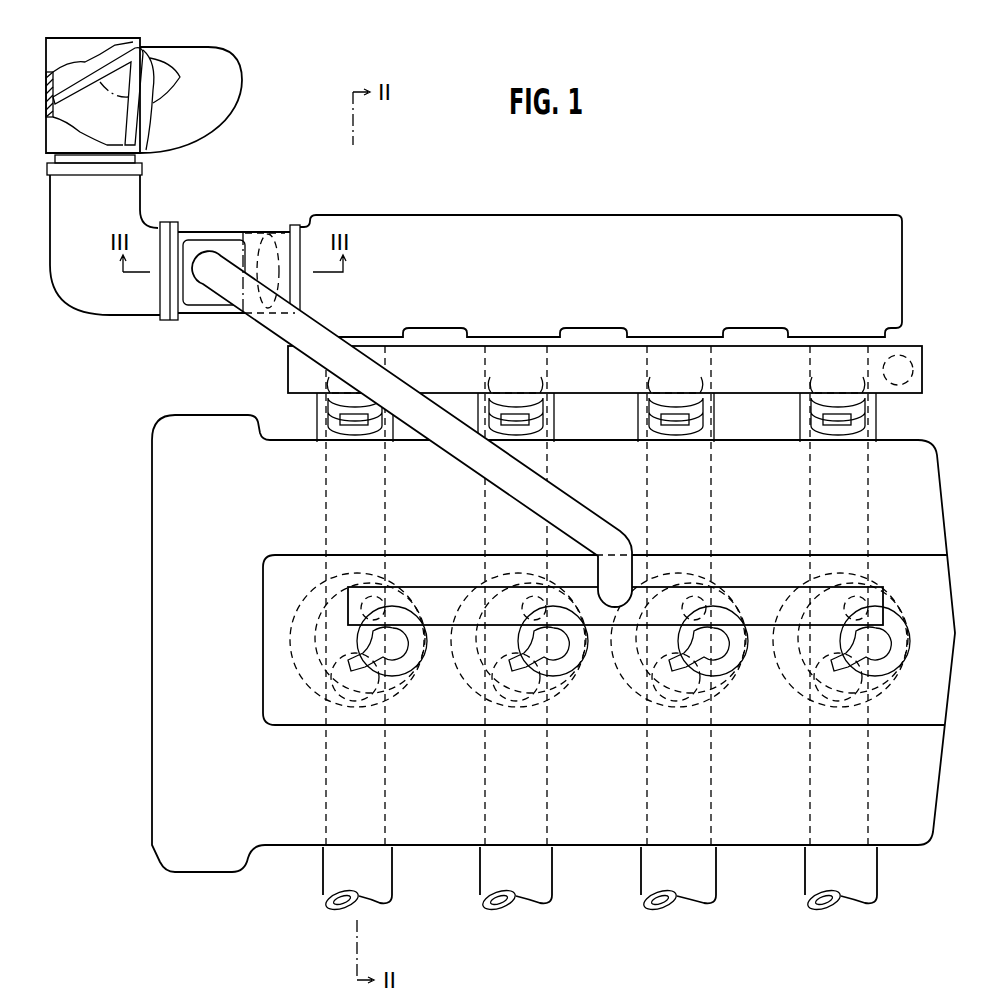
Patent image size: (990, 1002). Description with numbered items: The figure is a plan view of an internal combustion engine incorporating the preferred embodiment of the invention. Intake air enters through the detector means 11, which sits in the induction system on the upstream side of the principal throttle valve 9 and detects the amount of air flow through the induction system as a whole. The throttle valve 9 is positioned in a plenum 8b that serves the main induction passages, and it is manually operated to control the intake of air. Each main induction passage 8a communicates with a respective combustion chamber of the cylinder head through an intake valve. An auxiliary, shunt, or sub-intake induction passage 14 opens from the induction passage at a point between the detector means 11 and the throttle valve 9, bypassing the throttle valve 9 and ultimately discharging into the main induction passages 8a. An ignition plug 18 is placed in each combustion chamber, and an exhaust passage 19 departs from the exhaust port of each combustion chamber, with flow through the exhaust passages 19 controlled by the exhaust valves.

The detector means 11 is at (173, 34).
The principal throttle valve 9 is at (283, 232).
The plenum 8b is at (431, 228).
The main induction passage 8a is at (390, 476).
The sub-intake induction passage 14 is at (325, 333).
The ignition plug 18 is at (410, 663).
The exhaust passage 19 is at (393, 882).